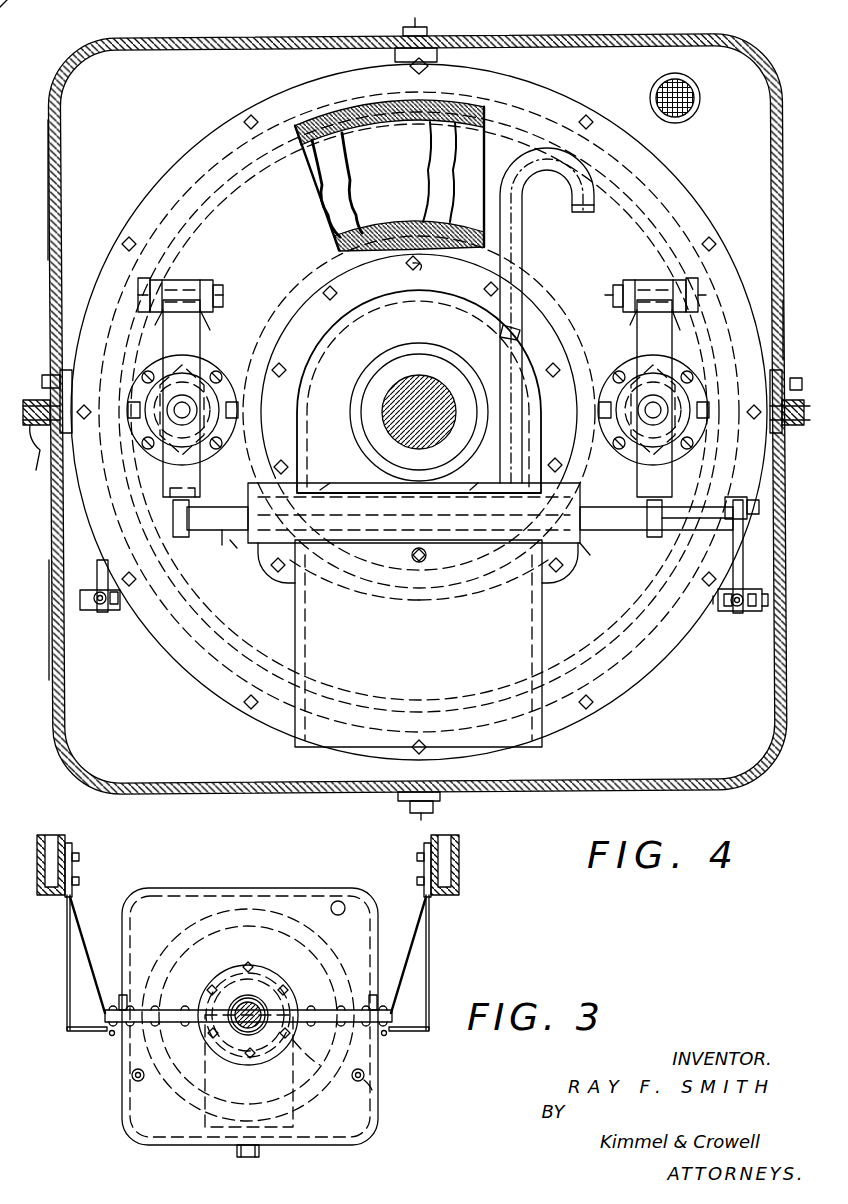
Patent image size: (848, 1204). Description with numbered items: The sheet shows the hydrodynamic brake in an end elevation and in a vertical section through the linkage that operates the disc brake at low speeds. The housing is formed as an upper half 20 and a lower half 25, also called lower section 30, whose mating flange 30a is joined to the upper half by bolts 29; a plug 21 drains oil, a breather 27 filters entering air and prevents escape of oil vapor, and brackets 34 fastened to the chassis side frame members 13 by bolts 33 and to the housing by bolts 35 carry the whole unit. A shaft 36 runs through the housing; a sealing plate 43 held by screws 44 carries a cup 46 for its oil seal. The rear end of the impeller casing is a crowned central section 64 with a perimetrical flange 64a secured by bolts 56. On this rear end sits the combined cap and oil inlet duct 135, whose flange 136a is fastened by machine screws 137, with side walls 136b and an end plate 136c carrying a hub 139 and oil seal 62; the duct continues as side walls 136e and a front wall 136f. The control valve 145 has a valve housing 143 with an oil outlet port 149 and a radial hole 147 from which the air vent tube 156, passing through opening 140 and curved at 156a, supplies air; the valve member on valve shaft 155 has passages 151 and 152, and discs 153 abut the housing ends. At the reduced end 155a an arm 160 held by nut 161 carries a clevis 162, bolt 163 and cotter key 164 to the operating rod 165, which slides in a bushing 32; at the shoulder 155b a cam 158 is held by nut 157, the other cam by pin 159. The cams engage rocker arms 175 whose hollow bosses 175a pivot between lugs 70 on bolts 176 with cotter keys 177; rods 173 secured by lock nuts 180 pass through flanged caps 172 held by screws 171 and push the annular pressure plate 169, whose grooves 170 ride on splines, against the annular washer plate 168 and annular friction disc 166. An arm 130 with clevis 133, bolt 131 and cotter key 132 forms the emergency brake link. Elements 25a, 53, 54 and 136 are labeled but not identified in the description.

In FIG. 3, the side frame members 13 is at (50, 835).
In FIG. 4, the upper half of housing 20 is at (735, 50).
In FIG. 3, the upper half of housing 20 is at (273, 888).
In FIG. 4, the plug 21 is at (408, 805).
In FIG. 3, the plug 21 is at (237, 1152).
In FIG. 4, the lower half of housing 25 is at (48, 178).
In FIG. 4, the side wall 25a is at (795, 345).
In FIG. 4, the breather 27 is at (700, 108).
In FIG. 3, the breather 27 is at (338, 900).
In FIG. 4, the bolts 29 is at (28, 425).
In FIG. 3, the bolts 29 is at (315, 1010).
In FIG. 4, the lower half of housing 30 is at (49, 595).
In FIG. 4, the mating flange 30a is at (38, 458).
In FIG. 3, the bushing 32 is at (132, 1074).
In FIG. 3, the bolts 33 is at (79, 878).
In FIG. 3, the brackets 34 is at (67, 943).
In FIG. 3, the bolts 35 is at (80, 1032).
In FIG. 4, the shaft 36 is at (422, 378).
In FIG. 3, the shaft 36 is at (255, 995).
In FIG. 3, the plate 43 is at (232, 975).
In FIG. 3, the screws 44 is at (210, 1037).
In FIG. 3, the cup 46 is at (272, 985).
In FIG. 4, the bearing plate 53 is at (60, 365).
In FIG. 3, the bearing plate 53 is at (120, 998).
In FIG. 4, the bolt 54 is at (48, 375).
In FIG. 4, the bolts 56 is at (405, 70).
In FIG. 4, the oil seal 62 is at (365, 385).
In FIG. 4, the crowned central section 64 is at (530, 118).
In FIG. 3, the crowned central section 64 is at (165, 935).
In FIG. 4, the perimetrical flange 64a is at (290, 95).
In FIG. 4, the lugs 70 is at (150, 270).
In FIG. 4, the arm 130 is at (100, 560).
In FIG. 4, the bolt 131 is at (114, 605).
In FIG. 4, the cotter key 132 is at (88, 592).
In FIG. 4, the clevis 133 is at (98, 605).
In FIG. 4, the combined cap and oil inlet duct 135 is at (503, 629).
In FIG. 3, the combined cap and oil inlet duct 135 is at (130, 1085).
In FIG. 3, the frame plate 136 is at (317, 1047).
In FIG. 4, the flange 136a is at (305, 275).
In FIG. 4, the side walls 136b is at (296, 460).
In FIG. 4, the end plate 136c is at (390, 292).
In FIG. 4, the side walls of oil inlet duct 136e is at (295, 612).
In FIG. 4, the front wall 136f is at (528, 612).
In FIG. 4, the machine screws 137 is at (422, 270).
In FIG. 4, the hub 139 is at (368, 362).
In FIG. 4, the opening 140 is at (520, 334).
In FIG. 4, the valve housing 143 is at (587, 556).
In FIG. 4, the control valve 145 is at (334, 548).
In FIG. 4, the radial hole 147 is at (472, 490).
In FIG. 4, the oil outlet port 149 is at (330, 485).
In FIG. 4, the passage 151 is at (354, 577).
In FIG. 4, the passage 152 is at (475, 574).
In FIG. 4, the discs 153 is at (620, 535).
In FIG. 4, the valve shaft 155 is at (210, 527).
In FIG. 4, the reduced end 155a is at (725, 505).
In FIG. 4, the shoulder 155b is at (212, 548).
In FIG. 4, the air vent tube 156 is at (520, 228).
In FIG. 4, the curved upper end 156a is at (586, 212).
In FIG. 4, the nut 157 is at (189, 505).
In FIG. 4, the cams 158 is at (195, 490).
In FIG. 4, the pin 159 is at (655, 540).
In FIG. 4, the arm 160 is at (732, 612).
In FIG. 4, the nut 161 is at (752, 556).
In FIG. 4, the clevis 162 is at (714, 606).
In FIG. 4, the bolt 163 is at (726, 612).
In FIG. 4, the cotter key 164 is at (752, 608).
In FIG. 4, the operating rod 165 is at (766, 606).
In FIG. 3, the operating rod 165 is at (372, 1088).
In FIG. 4, the annular friction disc 166 is at (412, 167).
In FIG. 4, the annular washer plate 168 is at (338, 172).
In FIG. 4, the annular pressure plate 169 is at (348, 205).
In FIG. 4, the grooves 170 is at (90, 408).
In FIG. 4, the screws 171 is at (216, 372).
In FIG. 4, the flanged caps 172 is at (238, 415).
In FIG. 4, the rods 173 is at (417, 416).
In FIG. 4, the rocker arms 175 is at (648, 330).
In FIG. 4, the hollow bosses 175a is at (205, 280).
In FIG. 4, the bolts 176 is at (205, 310).
In FIG. 4, the cotter keys 177 is at (210, 290).
In FIG. 4, the lock nuts 180 is at (180, 395).